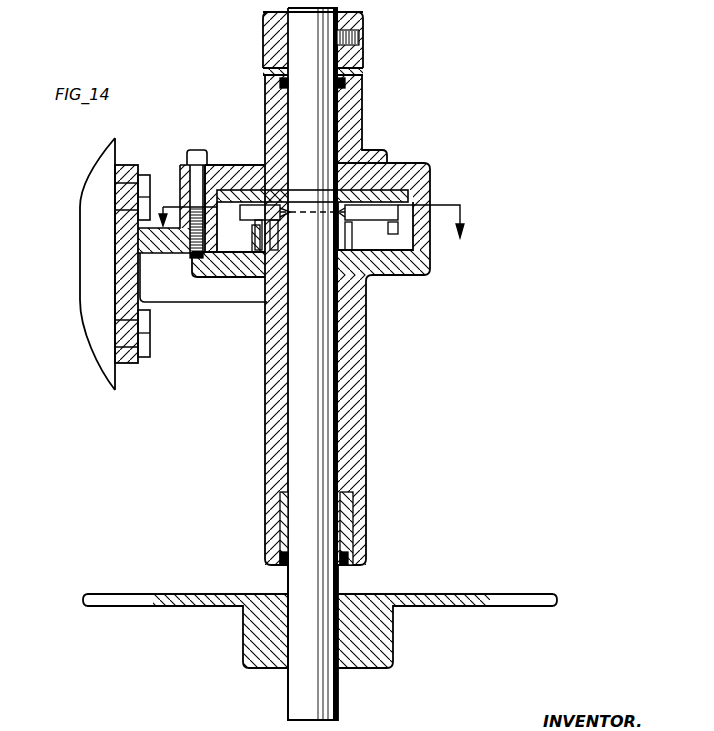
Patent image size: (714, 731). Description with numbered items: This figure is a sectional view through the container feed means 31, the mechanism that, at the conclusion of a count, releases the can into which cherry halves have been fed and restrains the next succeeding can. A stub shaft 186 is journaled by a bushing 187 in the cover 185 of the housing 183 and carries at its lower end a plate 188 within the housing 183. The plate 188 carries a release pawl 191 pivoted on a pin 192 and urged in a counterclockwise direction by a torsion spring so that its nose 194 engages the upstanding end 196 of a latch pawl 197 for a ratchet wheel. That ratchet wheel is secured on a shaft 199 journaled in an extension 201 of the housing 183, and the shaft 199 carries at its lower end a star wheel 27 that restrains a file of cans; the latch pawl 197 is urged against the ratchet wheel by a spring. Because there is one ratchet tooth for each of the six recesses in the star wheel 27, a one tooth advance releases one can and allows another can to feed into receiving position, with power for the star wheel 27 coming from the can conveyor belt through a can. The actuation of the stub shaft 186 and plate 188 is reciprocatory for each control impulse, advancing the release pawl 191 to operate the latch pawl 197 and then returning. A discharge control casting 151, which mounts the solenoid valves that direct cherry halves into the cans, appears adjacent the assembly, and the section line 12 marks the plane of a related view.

The section line 12- 12 is at (320, 213).
The star wheel 27 is at (440, 592).
The container feed means 31 is at (424, 139).
The discharge control casting 151 is at (80, 254).
The housing 183 is at (358, 352).
The cover 185 is at (357, 143).
The stub shaft 186 is at (322, 105).
The bushing 187 is at (340, 127).
The plate 188 is at (431, 166).
The release pawl 191 is at (413, 201).
The pin 192 is at (372, 222).
The nose 194 is at (256, 190).
The upstanding end 196 is at (228, 277).
The latch pawl 197 is at (258, 252).
The shaft 199 is at (338, 586).
The extension 201 is at (350, 429).